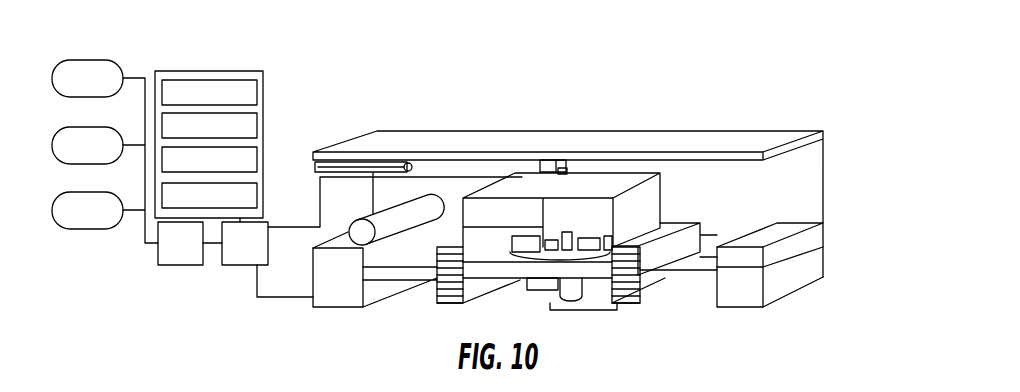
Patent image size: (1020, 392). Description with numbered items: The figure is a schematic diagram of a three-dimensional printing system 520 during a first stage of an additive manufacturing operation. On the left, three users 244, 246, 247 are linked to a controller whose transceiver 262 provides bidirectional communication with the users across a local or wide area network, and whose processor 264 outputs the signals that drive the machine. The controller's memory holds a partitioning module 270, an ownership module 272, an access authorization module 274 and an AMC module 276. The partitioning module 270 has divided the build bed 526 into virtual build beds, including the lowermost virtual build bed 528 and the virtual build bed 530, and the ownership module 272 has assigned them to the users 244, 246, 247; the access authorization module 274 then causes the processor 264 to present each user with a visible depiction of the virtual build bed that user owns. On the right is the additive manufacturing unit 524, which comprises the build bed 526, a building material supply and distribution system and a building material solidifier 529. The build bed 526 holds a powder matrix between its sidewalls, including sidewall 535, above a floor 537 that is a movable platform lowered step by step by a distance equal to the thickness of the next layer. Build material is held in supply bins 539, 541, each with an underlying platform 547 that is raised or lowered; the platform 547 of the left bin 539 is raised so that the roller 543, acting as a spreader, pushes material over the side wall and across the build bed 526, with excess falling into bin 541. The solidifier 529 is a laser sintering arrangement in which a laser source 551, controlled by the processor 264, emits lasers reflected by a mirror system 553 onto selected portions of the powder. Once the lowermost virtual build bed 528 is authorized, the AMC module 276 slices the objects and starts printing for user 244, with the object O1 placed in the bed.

The user 244 is at (82, 60).
The user 246 is at (82, 127).
The user 247 is at (82, 229).
The partitioning module 270 is at (263, 96).
The ownership module 272 is at (263, 130).
The access authorization module 274 is at (263, 164).
The AMC module 276 is at (263, 200).
The transceiver 262 is at (185, 265).
The processor 264 is at (245, 265).
The three-dimensional printing system 520 is at (762, 83).
The additive manufacturing unit 524 is at (830, 135).
The build bed 526 is at (643, 166).
The virtual build bed 528 is at (598, 248).
The building material solidifier 529 is at (558, 146).
The virtual build bed 530 is at (670, 230).
The sidewall 535 is at (565, 167).
The floor 537 is at (483, 267).
The build material supply bin 539 is at (437, 224).
The build material supply bin 541 is at (725, 233).
The roller 543 is at (428, 207).
The platform 547 is at (313, 255).
The laser source 551 is at (398, 162).
The mirror system 553 is at (547, 158).
The optical component O1 is at (590, 233).